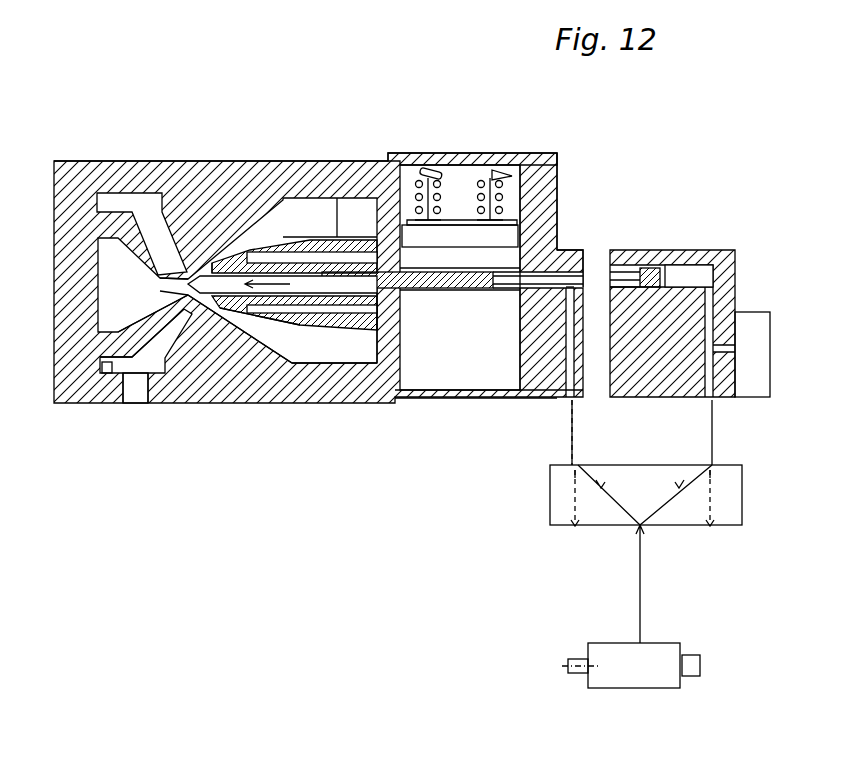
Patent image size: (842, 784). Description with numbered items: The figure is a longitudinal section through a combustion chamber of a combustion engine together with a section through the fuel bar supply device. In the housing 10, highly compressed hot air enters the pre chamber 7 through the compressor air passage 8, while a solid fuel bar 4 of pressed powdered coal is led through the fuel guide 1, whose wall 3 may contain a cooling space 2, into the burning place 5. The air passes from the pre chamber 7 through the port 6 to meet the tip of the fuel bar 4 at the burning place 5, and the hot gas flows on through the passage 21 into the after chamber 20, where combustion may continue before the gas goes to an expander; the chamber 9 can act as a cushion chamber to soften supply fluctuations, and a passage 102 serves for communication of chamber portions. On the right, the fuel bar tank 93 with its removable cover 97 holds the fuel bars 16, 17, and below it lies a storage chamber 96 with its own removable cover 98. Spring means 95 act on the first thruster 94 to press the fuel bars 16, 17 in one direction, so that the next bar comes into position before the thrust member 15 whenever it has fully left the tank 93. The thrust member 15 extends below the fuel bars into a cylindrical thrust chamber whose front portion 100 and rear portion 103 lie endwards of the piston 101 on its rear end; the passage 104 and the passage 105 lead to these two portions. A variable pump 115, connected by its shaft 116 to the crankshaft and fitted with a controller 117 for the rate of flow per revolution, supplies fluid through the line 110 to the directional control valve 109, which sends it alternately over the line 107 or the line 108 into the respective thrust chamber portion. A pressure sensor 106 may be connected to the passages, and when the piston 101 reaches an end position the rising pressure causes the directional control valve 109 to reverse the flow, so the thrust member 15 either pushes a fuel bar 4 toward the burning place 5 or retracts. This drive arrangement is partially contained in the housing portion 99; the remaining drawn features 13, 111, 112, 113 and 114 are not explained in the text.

The fuel guide 1 is at (357, 293).
The cooling space 2 is at (330, 294).
The wall 3 is at (318, 300).
The solid fuel bar 4 is at (300, 320).
The burning place 5 is at (182, 283).
The port 6 is at (188, 304).
The pre chamber 7 is at (107, 375).
The compressor air passage 8 is at (131, 396).
The cushion chamber 9 is at (119, 375).
The housing 10 is at (203, 386).
The block body 13 is at (323, 168).
The thrust member 15 is at (323, 272).
The fuel bar 16 is at (420, 268).
The fuel bar 17 is at (462, 238).
The after chamber 20 is at (270, 340).
The passage 21 is at (231, 315).
The fuel bar tank 93 is at (418, 180).
The first thruster 94 is at (460, 222).
The spring means 95 is at (495, 190).
The storage chamber 96 is at (433, 386).
The removable cover 97 is at (512, 163).
The removable cover 98 is at (468, 400).
The housing portion 99 is at (558, 182).
The thrust chamber front portion 100 is at (680, 275).
The piston 101 is at (650, 278).
The passage 102 is at (386, 397).
The thrust chamber rear portion 103 is at (573, 255).
The passage 104 is at (568, 404).
The passage 105 is at (720, 297).
The pressure sensor 106 is at (746, 400).
The line 107 is at (575, 428).
The line 108 is at (712, 428).
The directional control valve 109 is at (550, 501).
The line 110 is at (645, 588).
The valve passage 111 is at (618, 492).
The valve passage 112 is at (668, 492).
The outlet 113 is at (578, 492).
The outlet 114 is at (712, 495).
The variable pump 115 is at (610, 690).
The shaft 116 is at (576, 675).
The controller 117 is at (690, 678).